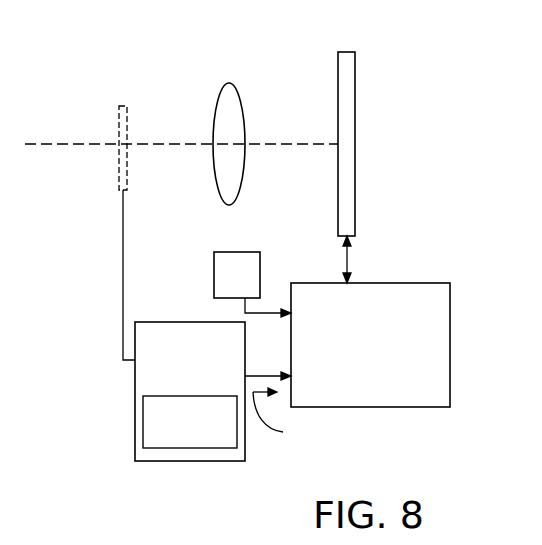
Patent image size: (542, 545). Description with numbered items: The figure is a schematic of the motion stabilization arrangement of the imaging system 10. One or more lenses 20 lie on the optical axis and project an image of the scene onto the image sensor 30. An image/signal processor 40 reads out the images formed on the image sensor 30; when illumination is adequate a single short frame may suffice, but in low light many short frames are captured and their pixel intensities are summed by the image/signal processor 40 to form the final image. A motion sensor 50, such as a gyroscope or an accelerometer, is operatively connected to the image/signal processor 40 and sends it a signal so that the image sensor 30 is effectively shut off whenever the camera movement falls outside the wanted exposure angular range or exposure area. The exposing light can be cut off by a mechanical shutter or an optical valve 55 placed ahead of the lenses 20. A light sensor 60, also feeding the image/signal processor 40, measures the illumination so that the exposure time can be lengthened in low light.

The imaging system 10 is at (450, 93).
The lenses 20 is at (217, 95).
The image sensor 30 is at (355, 70).
The image/signal processor 40 is at (403, 283).
The motion sensor 50 is at (133, 398).
The optical valve 55 is at (128, 128).
The light sensor 60 is at (213, 270).